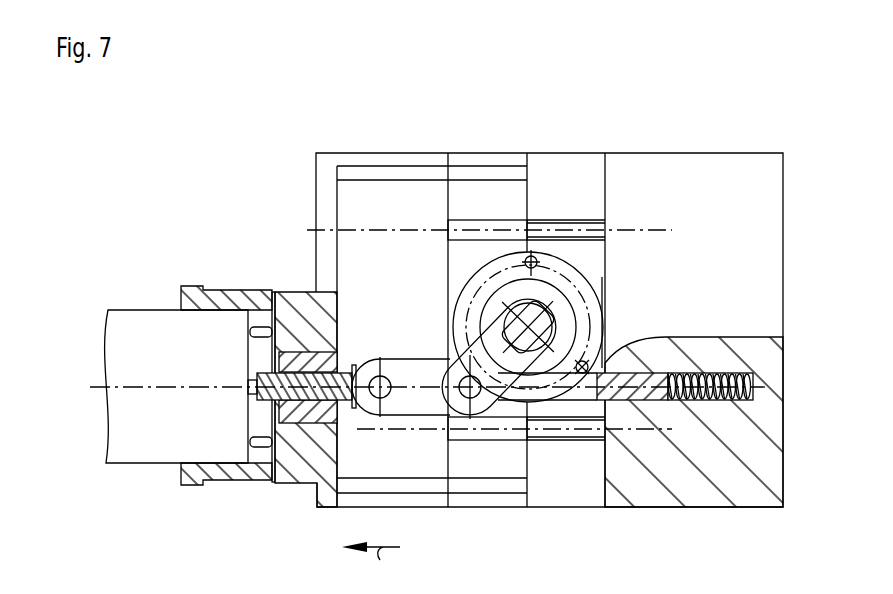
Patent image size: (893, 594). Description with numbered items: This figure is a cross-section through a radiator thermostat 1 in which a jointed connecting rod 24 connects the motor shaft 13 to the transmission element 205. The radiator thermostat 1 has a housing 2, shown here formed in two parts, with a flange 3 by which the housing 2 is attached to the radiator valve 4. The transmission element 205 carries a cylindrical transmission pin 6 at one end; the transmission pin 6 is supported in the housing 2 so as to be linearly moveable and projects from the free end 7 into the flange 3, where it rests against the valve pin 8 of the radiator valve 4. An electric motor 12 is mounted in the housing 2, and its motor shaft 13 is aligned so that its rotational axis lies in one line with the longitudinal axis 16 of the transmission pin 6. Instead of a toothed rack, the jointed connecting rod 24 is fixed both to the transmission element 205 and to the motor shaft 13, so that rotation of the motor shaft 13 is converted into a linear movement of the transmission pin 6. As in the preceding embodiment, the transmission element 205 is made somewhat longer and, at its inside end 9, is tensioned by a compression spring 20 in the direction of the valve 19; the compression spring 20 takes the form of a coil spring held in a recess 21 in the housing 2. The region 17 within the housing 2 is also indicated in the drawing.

The radiator thermostat 1 is at (150, 212).
The housing 2 is at (285, 315).
The flange 3 is at (227, 480).
The radiator valve 4 is at (137, 427).
The transmission pin 6 is at (303, 420).
The free end 7 is at (250, 366).
The valve pin 8 is at (248, 390).
The inside end 9 is at (648, 353).
The electric motor 12 is at (488, 265).
The motor shaft 13 is at (533, 318).
The longitudinal axis 16 is at (787, 387).
The receiving space 17 is at (702, 260).
The valve 19 is at (371, 568).
The compression spring 20 is at (680, 402).
The recess 21 is at (708, 402).
The jointed connecting rod 24 is at (432, 400).
The transmission element 205 is at (346, 356).